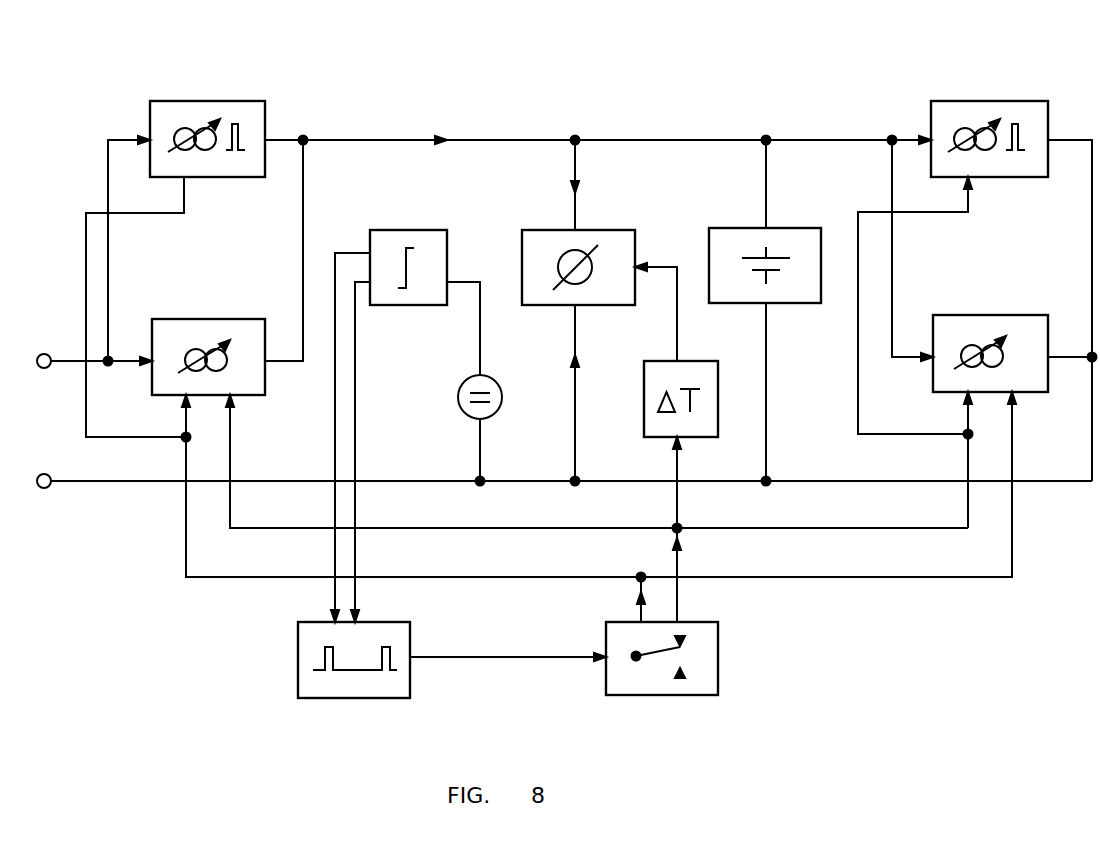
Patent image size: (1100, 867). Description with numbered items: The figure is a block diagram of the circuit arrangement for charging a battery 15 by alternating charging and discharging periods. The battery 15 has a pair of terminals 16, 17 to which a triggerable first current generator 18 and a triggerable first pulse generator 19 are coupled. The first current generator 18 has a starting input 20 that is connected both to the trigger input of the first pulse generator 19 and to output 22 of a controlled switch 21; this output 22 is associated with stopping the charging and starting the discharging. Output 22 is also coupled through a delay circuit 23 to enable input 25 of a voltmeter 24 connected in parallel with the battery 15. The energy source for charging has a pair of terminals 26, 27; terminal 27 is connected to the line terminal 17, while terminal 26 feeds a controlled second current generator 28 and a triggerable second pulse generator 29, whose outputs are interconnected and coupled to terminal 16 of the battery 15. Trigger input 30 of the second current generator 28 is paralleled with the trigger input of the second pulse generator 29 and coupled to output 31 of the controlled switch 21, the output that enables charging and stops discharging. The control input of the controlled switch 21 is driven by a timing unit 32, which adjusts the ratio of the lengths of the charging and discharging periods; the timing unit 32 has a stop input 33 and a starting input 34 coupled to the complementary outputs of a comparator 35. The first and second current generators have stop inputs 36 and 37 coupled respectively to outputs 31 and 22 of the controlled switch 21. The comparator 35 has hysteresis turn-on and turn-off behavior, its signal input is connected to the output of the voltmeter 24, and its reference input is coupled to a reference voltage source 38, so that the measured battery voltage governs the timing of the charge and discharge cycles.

The battery 15 is at (729, 224).
The battery terminal 16 is at (777, 196).
The battery terminal 17 is at (772, 390).
The triggerable first current generator 18 is at (985, 312).
The triggerable first pulse generator 19 is at (987, 97).
The starting input 20 is at (960, 416).
The controlled switch 21 is at (722, 656).
The output of controlled switch 22 is at (684, 600).
The delay circuit 23 is at (636, 410).
The voltmeter 24 is at (542, 224).
The enable input 25 is at (660, 260).
The source terminal 26 is at (40, 352).
The source terminal 27 is at (44, 490).
The controlled second current generator 28 is at (210, 315).
The triggerable second pulse generator 29 is at (205, 97).
The trigger input 30 is at (176, 423).
The output of controlled switch 31 is at (634, 592).
The timing unit 32 is at (292, 655).
The stop input 33 is at (328, 396).
The starting input 34 is at (360, 358).
The comparator 35 is at (404, 224).
The stop input 36 is at (1018, 428).
The stop input 37 is at (235, 428).
The reference voltage source 38 is at (448, 397).